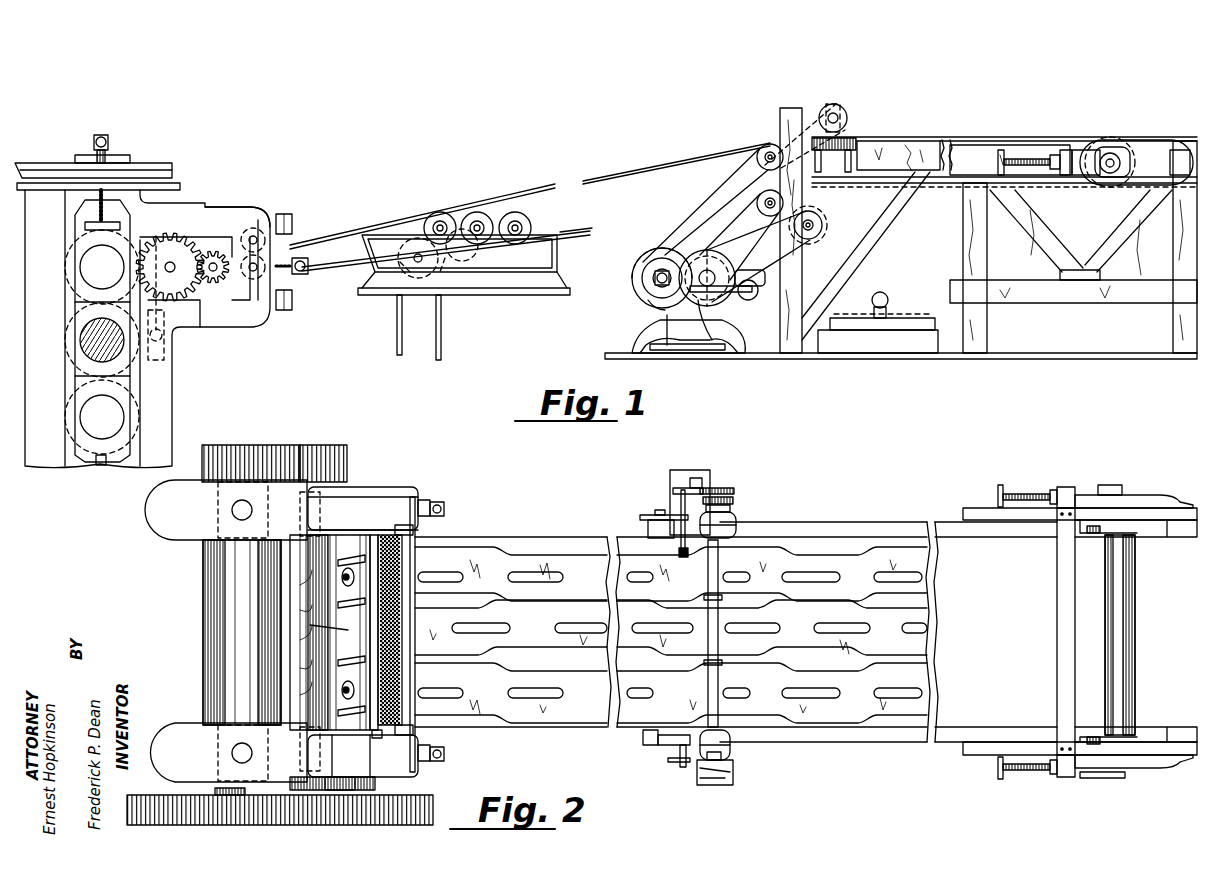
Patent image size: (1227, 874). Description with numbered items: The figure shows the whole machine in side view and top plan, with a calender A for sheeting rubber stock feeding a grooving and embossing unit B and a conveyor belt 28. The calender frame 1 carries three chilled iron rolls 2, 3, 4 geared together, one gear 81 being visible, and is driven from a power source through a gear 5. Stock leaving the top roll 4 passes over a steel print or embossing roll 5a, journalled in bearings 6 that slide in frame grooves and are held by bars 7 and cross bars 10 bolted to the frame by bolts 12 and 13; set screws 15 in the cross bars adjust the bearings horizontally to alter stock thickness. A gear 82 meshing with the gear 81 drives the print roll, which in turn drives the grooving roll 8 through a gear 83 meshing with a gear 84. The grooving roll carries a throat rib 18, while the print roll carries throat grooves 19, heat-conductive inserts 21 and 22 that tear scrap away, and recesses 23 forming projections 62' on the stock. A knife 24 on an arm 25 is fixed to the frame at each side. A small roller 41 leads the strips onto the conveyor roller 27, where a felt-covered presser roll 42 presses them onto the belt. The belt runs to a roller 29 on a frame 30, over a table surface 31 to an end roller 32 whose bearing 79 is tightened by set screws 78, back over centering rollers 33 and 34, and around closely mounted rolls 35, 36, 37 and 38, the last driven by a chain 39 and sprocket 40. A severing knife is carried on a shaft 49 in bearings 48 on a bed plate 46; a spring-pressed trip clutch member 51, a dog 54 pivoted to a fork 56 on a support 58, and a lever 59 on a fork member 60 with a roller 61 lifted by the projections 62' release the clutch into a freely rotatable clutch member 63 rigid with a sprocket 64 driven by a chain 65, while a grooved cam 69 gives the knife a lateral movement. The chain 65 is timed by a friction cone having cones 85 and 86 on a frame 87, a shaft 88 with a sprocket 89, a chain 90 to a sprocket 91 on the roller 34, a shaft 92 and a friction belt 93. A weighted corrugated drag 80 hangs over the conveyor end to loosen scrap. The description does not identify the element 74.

In FIG. 1, the frame 1 is at (160, 404).
In FIG. 2, the frame 1 is at (165, 525).
In FIG. 1, the chilled iron roll 2 is at (80, 408).
In FIG. 1, the chilled iron roll 3 is at (75, 330).
In FIG. 1, the top roll 4 is at (80, 248).
In FIG. 2, the top roll 4 is at (215, 610).
In FIG. 2, the gear 5 is at (430, 805).
In FIG. 2, the print or embossing roll 5a is at (340, 520).
In FIG. 1, the bearings 6 is at (230, 280).
In FIG. 1, the bars 7 is at (207, 210).
In FIG. 2, the bars 7 is at (335, 495).
In FIG. 2, the grooving roll 8 is at (360, 505).
In FIG. 1, the cross bars 10 is at (255, 212).
In FIG. 2, the cross bars 10 is at (405, 490).
In FIG. 1, the bolt 12 is at (290, 218).
In FIG. 1, the bolt 13 is at (286, 300).
In FIG. 2, the bolt 13 is at (424, 500).
In FIG. 1, the set screws 15 is at (305, 272).
In FIG. 2, the set screws 15 is at (447, 503).
In FIG. 2, the rib 18 is at (362, 545).
In FIG. 2, the grooves 19 is at (310, 632).
In FIG. 2, the insert 21 is at (282, 695).
In FIG. 2, the inserts 22 is at (280, 586).
In FIG. 2, the recesses 23 is at (280, 562).
In FIG. 1, the knife 24 is at (160, 288).
In FIG. 1, the arm 25 is at (172, 308).
In FIG. 1, the conveyor roller 27 is at (258, 272).
In FIG. 1, the conveyor belt 28 is at (348, 232).
In FIG. 2, the conveyor belt 28 is at (570, 535).
In FIG. 1, the roller 29 is at (756, 160).
In FIG. 1, the frame 30 is at (1190, 254).
In FIG. 2, the frame 30 is at (1183, 527).
In FIG. 1, the table surface 31 is at (925, 142).
In FIG. 1, the roller 32 is at (1178, 155).
In FIG. 2, the roller 32 is at (1138, 536).
In FIG. 1, the roller 33 is at (757, 205).
In FIG. 1, the roller 34 is at (826, 226).
In FIG. 1, the roll 35 is at (528, 222).
In FIG. 1, the roll 36 is at (485, 215).
In FIG. 1, the roll 37 is at (448, 214).
In FIG. 1, the roll 38 is at (460, 262).
In FIG. 1, the chain 39 is at (442, 334).
In FIG. 1, the sprocket 40 is at (420, 285).
In FIG. 2, the small roller 41 is at (384, 746).
In FIG. 1, the presser roll 42 is at (262, 230).
In FIG. 2, the presser roll 42 is at (400, 545).
In FIG. 2, the bed plate 46 is at (650, 735).
In FIG. 2, the bearings 48 is at (740, 515).
In FIG. 1, the shaft 49 is at (830, 110).
In FIG. 2, the trip clutch member 51 is at (732, 494).
In FIG. 2, the dog 54 is at (686, 490).
In FIG. 2, the fork 56 is at (700, 484).
In FIG. 2, the support 58 is at (695, 472).
In FIG. 2, the lever 59 is at (678, 493).
In FIG. 2, the fork member 60 is at (662, 520).
In FIG. 2, the roller 61 is at (684, 557).
In FIG. 2, the projection 62' is at (671, 615).
In FIG. 2, the clutch member 63 is at (735, 500).
In FIG. 1, the sprocket 64 is at (846, 114).
In FIG. 2, the sprocket 64 is at (728, 518).
In FIG. 1, the chain 65 is at (718, 208).
In FIG. 2, the cam 69 is at (720, 788).
In FIG. 1, the table 74 is at (888, 348).
In FIG. 1, the set screws 78 is at (1025, 158).
In FIG. 2, the set screws 78 is at (1022, 497).
In FIG. 1, the bearing 79 is at (1105, 152).
In FIG. 2, the bearing 79 is at (1092, 492).
In FIG. 1, the weighted corrugated flexible material 80 is at (1122, 140).
In FIG. 2, the weighted corrugated flexible material 80 is at (1110, 600).
In FIG. 2, the gear 81 is at (243, 455).
In FIG. 2, the gear 82 is at (330, 455).
In FIG. 1, the gear 83 is at (215, 280).
In FIG. 2, the gear 83 is at (365, 778).
In FIG. 1, the gear 84 is at (185, 275).
In FIG. 2, the gear 84 is at (315, 778).
In FIG. 1, the cone-shaped roll 85 is at (662, 258).
In FIG. 1, the cone-shaped roll 86 is at (690, 268).
In FIG. 1, the frame 87 is at (728, 335).
In FIG. 1, the shaft 88 is at (700, 290).
In FIG. 1, the sprocket 89 is at (728, 270).
In FIG. 1, the chain 90 is at (756, 270).
In FIG. 1, the sprocket 91 is at (824, 210).
In FIG. 1, the shaft 92 is at (652, 283).
In FIG. 1, the friction belt 93 is at (648, 305).
In FIG. 1, the calender A is at (120, 160).
In FIG. 1, the grooving and embossing unit B is at (226, 200).